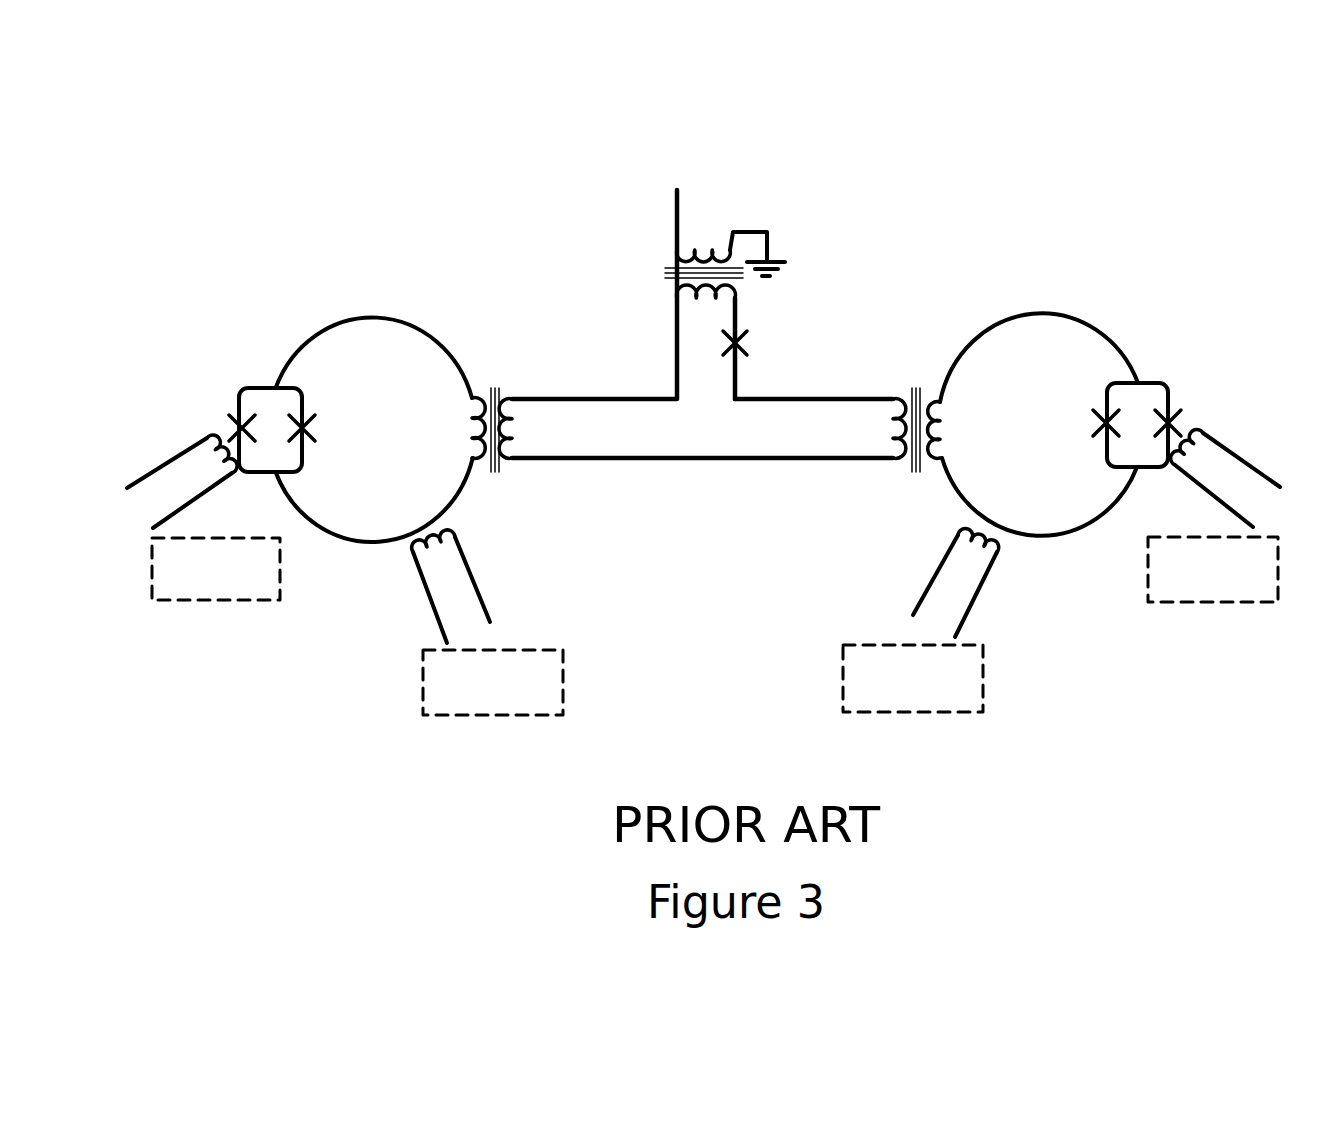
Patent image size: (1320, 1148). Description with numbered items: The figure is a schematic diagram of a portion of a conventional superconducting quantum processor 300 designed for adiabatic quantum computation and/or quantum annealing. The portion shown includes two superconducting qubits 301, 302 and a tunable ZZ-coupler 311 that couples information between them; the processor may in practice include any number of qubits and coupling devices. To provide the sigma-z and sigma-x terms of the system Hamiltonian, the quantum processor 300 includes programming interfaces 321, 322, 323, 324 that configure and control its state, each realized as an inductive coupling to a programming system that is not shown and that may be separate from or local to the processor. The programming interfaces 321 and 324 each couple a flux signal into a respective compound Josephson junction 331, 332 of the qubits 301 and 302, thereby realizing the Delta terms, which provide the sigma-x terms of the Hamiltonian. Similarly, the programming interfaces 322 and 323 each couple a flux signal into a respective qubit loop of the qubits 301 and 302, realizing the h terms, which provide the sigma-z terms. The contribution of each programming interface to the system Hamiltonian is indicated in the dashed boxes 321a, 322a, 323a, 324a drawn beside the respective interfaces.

The superconducting quantum processor 300 is at (232, 178).
The superconducting qubit 301 is at (370, 332).
The superconducting qubit 302 is at (1045, 328).
The tunable ZZ-coupler 311 is at (680, 440).
The programming interface 321 is at (207, 440).
The box 321a is at (240, 588).
The programming interface 322 is at (447, 585).
The box 322a is at (513, 712).
The programming interface 323 is at (955, 580).
The box 323a is at (880, 702).
The programming interface 324 is at (1200, 432).
The box 324a is at (1177, 587).
The compound Josephson junction 331 is at (283, 427).
The compound Josephson junction 332 is at (1127, 422).